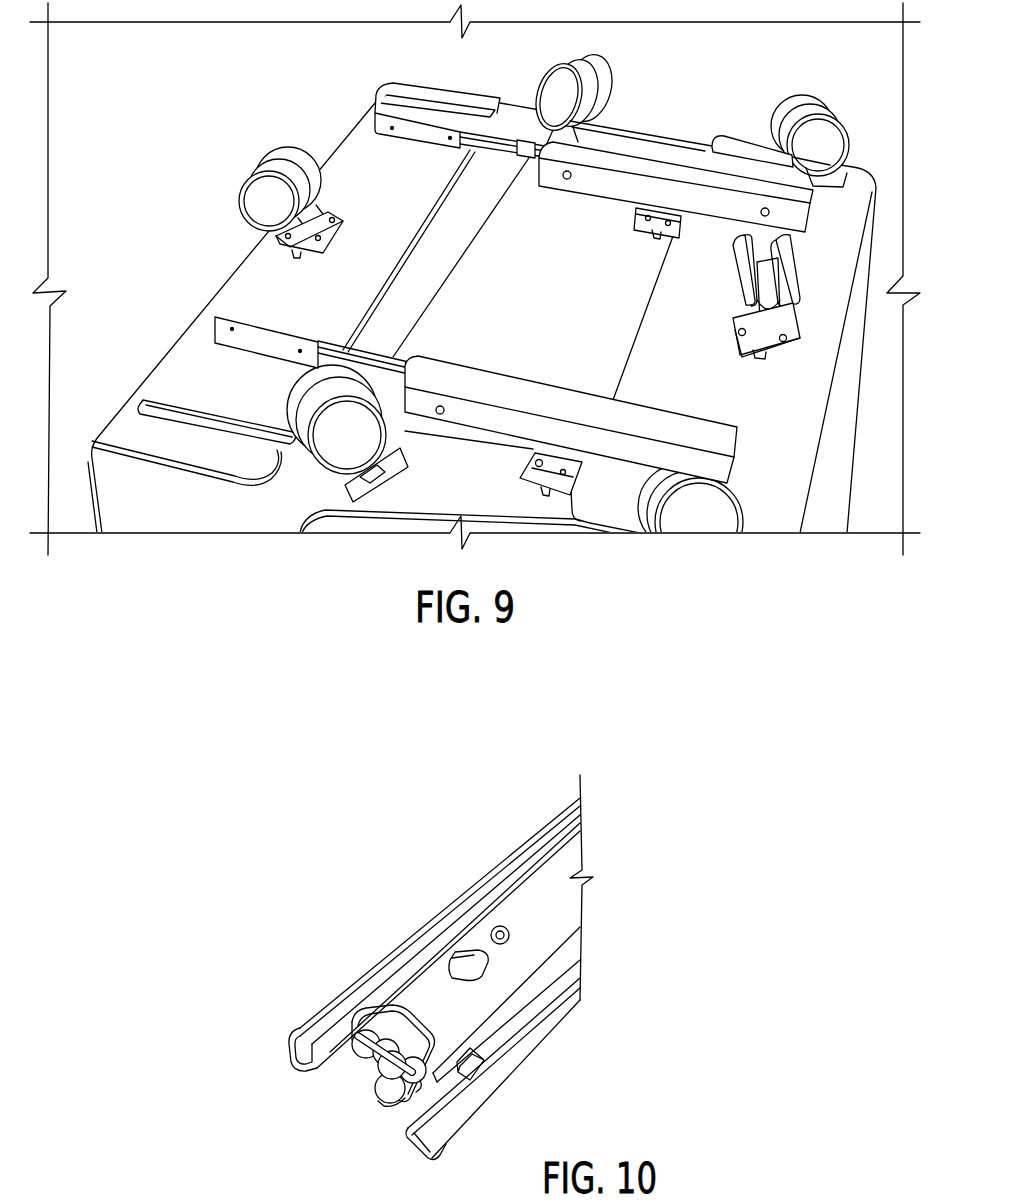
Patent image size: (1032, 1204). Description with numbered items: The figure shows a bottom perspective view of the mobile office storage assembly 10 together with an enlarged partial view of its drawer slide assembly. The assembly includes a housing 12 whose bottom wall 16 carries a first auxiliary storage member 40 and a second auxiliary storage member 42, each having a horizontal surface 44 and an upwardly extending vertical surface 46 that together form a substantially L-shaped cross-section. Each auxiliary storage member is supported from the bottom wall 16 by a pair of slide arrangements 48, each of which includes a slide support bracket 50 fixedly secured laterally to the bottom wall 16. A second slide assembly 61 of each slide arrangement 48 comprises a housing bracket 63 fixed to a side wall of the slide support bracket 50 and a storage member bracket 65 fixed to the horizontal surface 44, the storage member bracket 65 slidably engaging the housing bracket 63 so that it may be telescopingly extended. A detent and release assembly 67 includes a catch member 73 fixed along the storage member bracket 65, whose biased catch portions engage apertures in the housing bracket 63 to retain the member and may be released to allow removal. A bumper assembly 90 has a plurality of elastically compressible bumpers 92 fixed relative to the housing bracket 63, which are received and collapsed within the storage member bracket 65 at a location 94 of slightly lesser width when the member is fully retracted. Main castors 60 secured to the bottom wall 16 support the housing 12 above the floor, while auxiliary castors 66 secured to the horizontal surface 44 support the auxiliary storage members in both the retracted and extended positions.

In FIG. 9, the mobile office storage assembly 10 is at (683, 86).
In FIG. 9, the housing 12 is at (676, 157).
In FIG. 9, the bottom wall 16 is at (545, 342).
In FIG. 9, the first auxiliary storage member 40 is at (416, 249).
In FIG. 9, the second auxiliary storage member 42 is at (645, 299).
In FIG. 9, the horizontal surface 44 is at (341, 302).
In FIG. 9, the vertical surface 46 is at (108, 493).
In FIG. 9, the slide arrangement 48 is at (679, 153).
In FIG. 9, the slide support bracket 50 is at (612, 188).
In FIG. 9, the main castor 60 is at (327, 452).
In FIG. 10, the second slide assembly 61 is at (447, 968).
In FIG. 10, the housing bracket 63 is at (500, 853).
In FIG. 9, the storage member bracket 65 is at (508, 168).
In FIG. 10, the storage member bracket 65 is at (513, 963).
In FIG. 9, the auxiliary castor 66 is at (322, 176).
In FIG. 9, the detent and release assembly 67 is at (395, 351).
In FIG. 9, the catch member 73 is at (519, 160).
In FIG. 10, the bumper assembly 90 is at (343, 1046).
In FIG. 10, the bumpers 92 is at (403, 1083).
In FIG. 10, the location 94 is at (400, 1015).